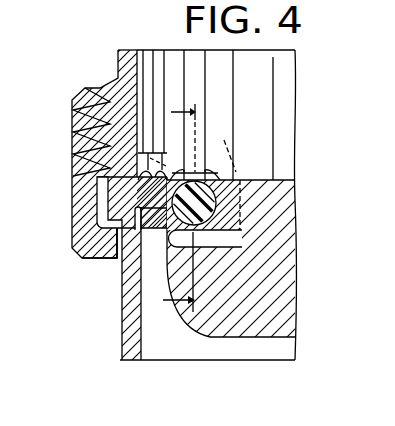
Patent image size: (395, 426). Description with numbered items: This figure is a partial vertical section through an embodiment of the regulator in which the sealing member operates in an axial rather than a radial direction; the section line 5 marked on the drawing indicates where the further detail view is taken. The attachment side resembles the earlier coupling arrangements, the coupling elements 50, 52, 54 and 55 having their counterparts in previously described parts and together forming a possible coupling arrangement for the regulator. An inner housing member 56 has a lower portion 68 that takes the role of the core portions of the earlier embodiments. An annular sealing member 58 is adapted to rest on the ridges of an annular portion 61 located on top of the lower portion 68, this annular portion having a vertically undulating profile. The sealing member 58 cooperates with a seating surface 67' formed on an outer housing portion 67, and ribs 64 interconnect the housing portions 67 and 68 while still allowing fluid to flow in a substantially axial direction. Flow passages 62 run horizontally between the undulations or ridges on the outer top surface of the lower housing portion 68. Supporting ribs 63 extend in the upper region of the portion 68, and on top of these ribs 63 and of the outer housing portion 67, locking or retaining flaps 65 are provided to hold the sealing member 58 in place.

The coupling element 50 is at (94, 74).
The coupling element 52 is at (78, 115).
The coupling element 54 is at (126, 58).
The coupling element 55 is at (127, 303).
The inner housing member 56 is at (320, 129).
The annular sealing member 58 is at (110, 221).
The annular portion 61 is at (122, 280).
The flow passages 62 is at (245, 238).
The supporting ribs 63 is at (229, 190).
The ribs 64 is at (133, 257).
The locking or retaining flaps 65 is at (148, 181).
The outer housing portion 67 is at (102, 216).
The seating surface 67' is at (77, 243).
The lower portion 68 is at (286, 285).
The section line 5- 5 is at (173, 211).